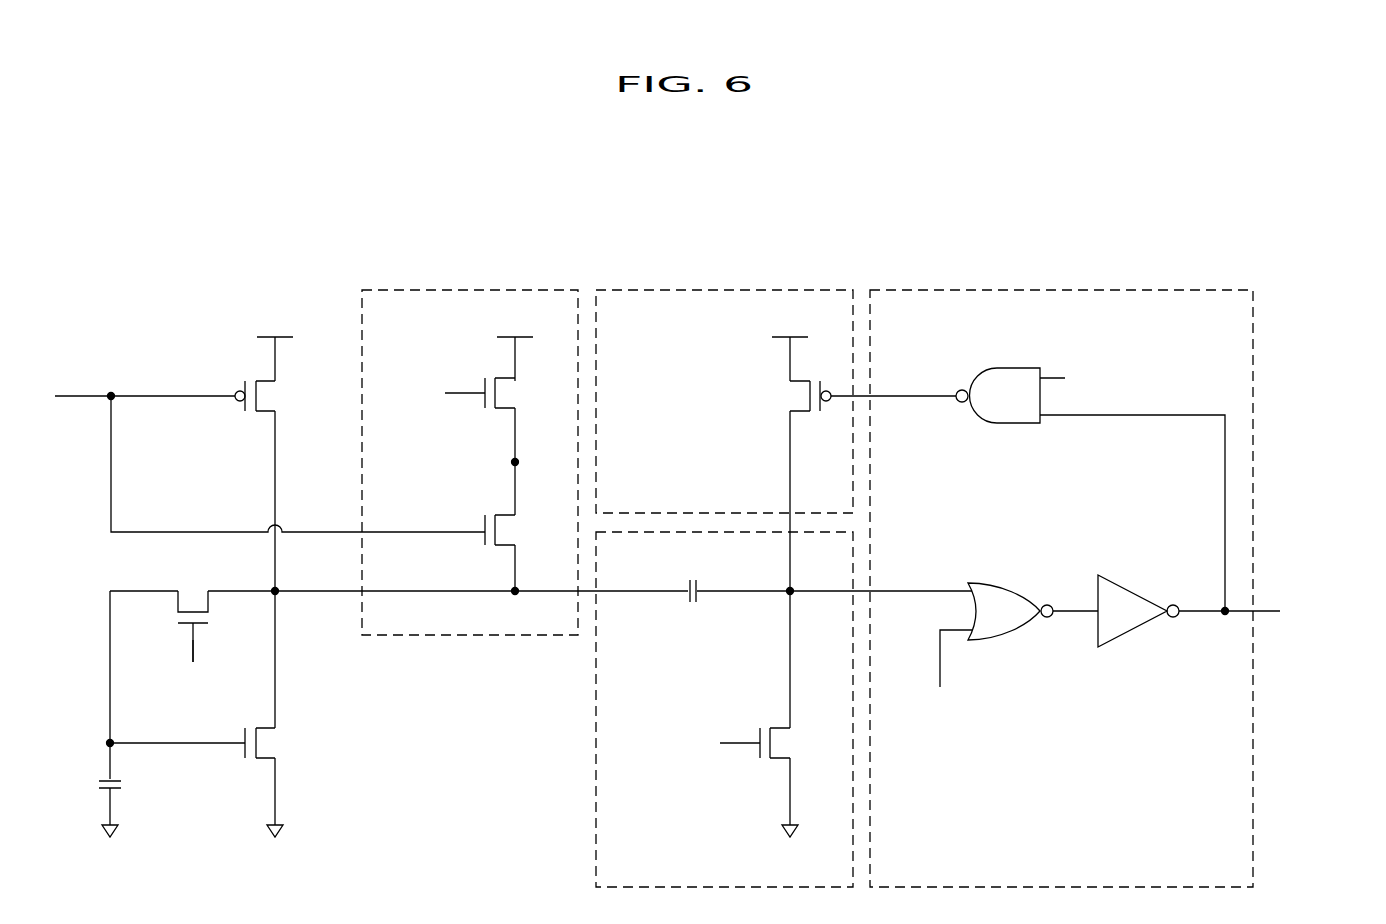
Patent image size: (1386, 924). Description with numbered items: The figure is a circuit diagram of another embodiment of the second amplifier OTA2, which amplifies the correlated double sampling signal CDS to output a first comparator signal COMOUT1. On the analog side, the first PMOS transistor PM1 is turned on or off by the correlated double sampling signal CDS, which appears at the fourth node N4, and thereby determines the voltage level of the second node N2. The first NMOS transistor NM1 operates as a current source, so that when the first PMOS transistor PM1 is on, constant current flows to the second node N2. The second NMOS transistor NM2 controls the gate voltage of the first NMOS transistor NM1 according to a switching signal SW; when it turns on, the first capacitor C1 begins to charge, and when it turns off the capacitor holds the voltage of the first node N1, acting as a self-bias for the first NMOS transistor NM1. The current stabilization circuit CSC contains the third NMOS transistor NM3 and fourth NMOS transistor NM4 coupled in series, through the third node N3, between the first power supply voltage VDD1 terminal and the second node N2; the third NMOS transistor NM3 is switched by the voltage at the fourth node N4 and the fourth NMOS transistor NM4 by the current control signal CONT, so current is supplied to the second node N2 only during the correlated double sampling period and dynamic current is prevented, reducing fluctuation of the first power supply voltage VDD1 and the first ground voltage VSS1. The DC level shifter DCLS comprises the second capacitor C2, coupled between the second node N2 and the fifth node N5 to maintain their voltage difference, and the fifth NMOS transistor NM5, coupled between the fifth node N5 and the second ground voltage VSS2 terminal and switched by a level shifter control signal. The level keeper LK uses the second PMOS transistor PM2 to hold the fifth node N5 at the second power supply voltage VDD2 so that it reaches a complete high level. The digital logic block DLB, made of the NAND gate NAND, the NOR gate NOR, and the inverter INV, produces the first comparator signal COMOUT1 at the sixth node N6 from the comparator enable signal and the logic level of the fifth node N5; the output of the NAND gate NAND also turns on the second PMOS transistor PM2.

The second amplifier OTA2 is at (1192, 203).
The current stabilization circuit CSC is at (448, 290).
The level keeper LK is at (723, 290).
The DC level shifter DCLS is at (596, 813).
The digital logic block DLB is at (988, 290).
The first power supply voltage VDD1 is at (395, 344).
The second power supply voltage VDD2 is at (790, 344).
The first ground voltage VSS1 is at (192, 814).
The second ground voltage VSS2 is at (790, 814).
The correlated double sampling signal CDS is at (59, 398).
The fourth node N4 is at (291, 449).
The first PMOS transistor PM1 is at (277, 486).
The second node N2 is at (541, 607).
The second NMOS transistor NM2 is at (196, 615).
The switching signal SW is at (194, 668).
The first node N1 is at (162, 685).
The first capacitor C1 is at (124, 785).
The first NMOS transistor NM1 is at (282, 674).
The current control signal CONT is at (435, 396).
The fourth NMOS transistor NM4 is at (522, 420).
The third node N3 is at (531, 484).
The third NMOS transistor NM3 is at (522, 553).
The second PMOS transistor PM2 is at (853, 486).
The fifth node N5 is at (807, 658).
The second capacitor C2 is at (692, 605).
The fifth NMOS transistor NM5 is at (796, 743).
The NAND gate NAND is at (1090, 489).
The NOR gate NOR is at (1019, 635).
The inverter INV is at (1189, 611).
The sixth node N6 is at (1225, 627).
The first comparator signal COMOUT1 is at (1334, 613).